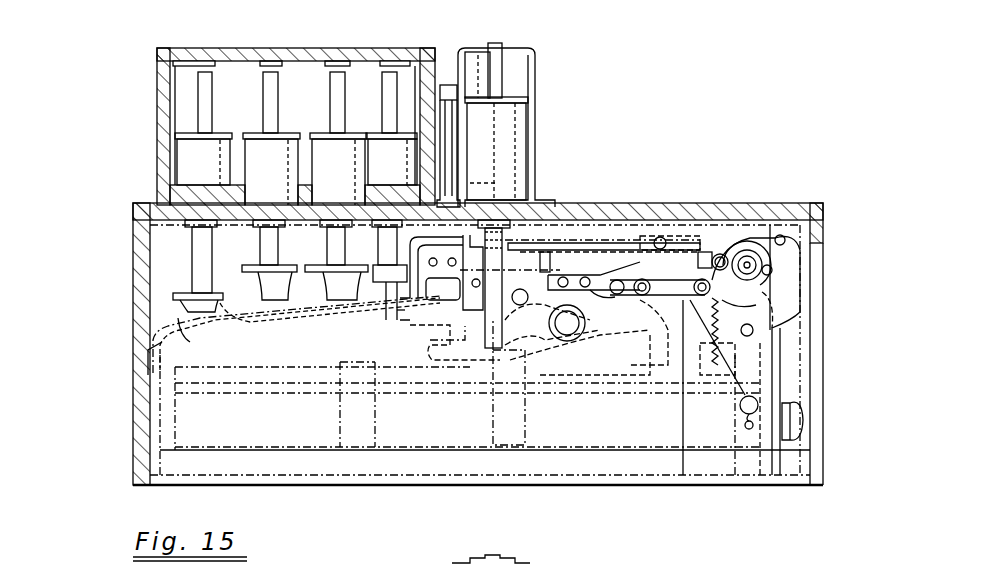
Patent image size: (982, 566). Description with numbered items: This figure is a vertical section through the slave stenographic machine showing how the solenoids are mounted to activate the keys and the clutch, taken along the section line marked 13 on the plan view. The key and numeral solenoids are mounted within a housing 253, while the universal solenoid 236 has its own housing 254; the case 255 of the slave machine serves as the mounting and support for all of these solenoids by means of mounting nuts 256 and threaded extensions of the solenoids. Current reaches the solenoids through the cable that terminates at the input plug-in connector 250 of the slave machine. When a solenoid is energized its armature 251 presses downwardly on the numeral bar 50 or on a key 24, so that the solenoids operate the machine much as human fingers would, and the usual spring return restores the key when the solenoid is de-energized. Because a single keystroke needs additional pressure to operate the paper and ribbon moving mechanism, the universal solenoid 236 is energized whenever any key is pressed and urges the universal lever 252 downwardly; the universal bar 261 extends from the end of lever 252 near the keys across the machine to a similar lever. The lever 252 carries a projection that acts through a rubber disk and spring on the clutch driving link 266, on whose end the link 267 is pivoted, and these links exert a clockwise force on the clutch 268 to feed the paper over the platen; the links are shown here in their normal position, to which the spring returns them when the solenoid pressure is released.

The section line 13- 13 is at (160, 67).
The key 24 is at (290, 293).
The numeral bar 50 is at (393, 276).
The universal solenoid 236 is at (512, 146).
The input plug-in connector 250 is at (447, 86).
The armatures 251 is at (332, 240).
The universal lever 252 is at (492, 394).
The housing 253 is at (340, 14).
The housing 254 is at (538, 76).
The case 255 is at (140, 312).
The mounting nuts 256 is at (238, 223).
The universal bar 261 is at (430, 338).
The clutch driving link 266 is at (688, 290).
The link 267 is at (694, 240).
The clutch 268 is at (752, 240).